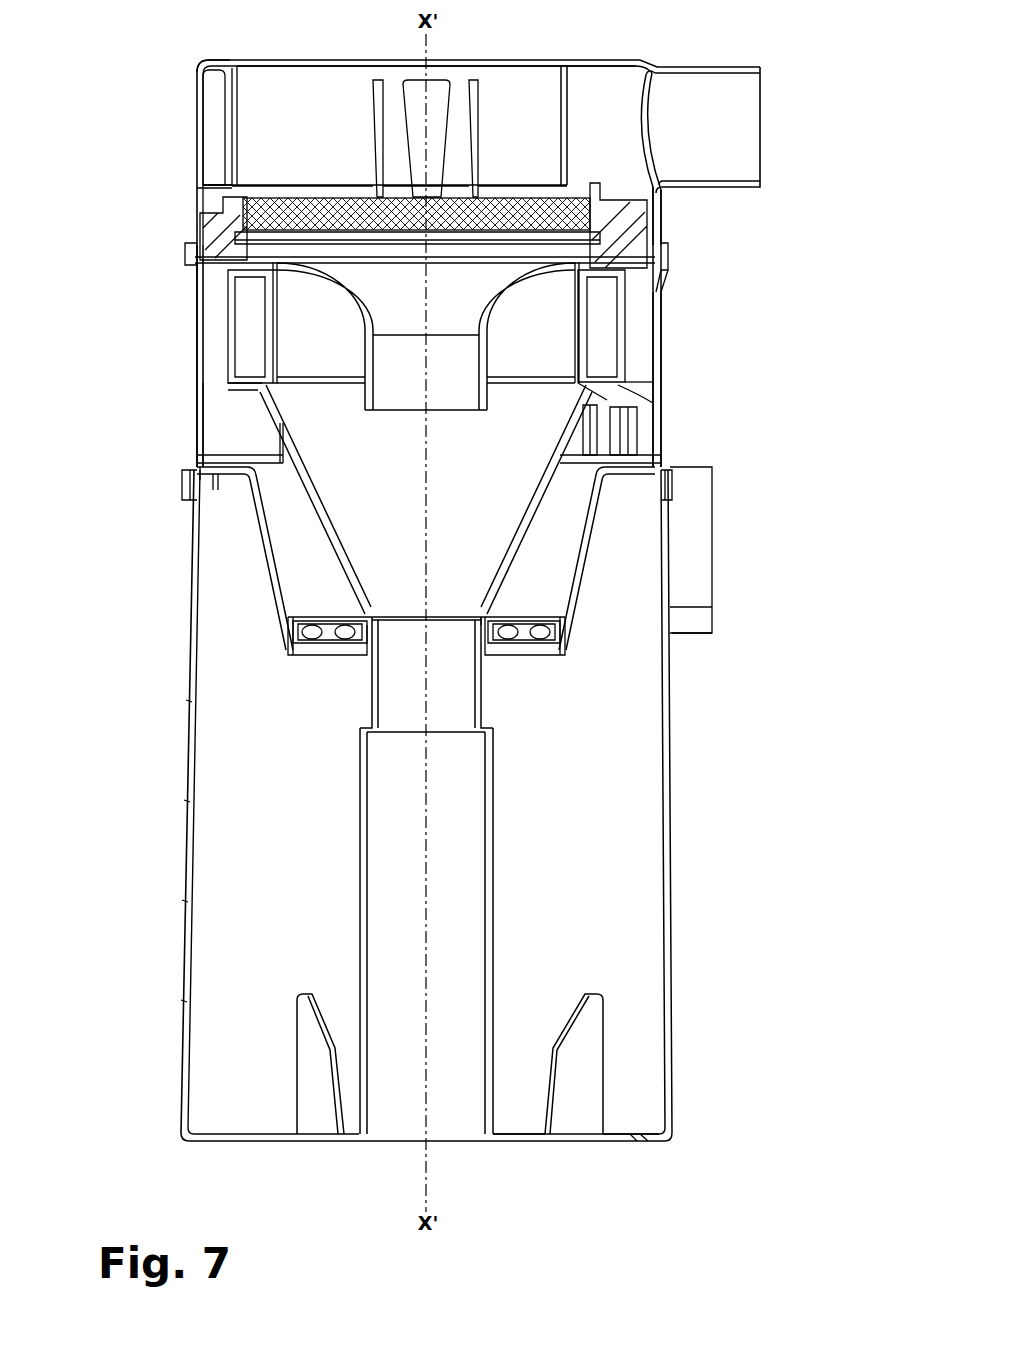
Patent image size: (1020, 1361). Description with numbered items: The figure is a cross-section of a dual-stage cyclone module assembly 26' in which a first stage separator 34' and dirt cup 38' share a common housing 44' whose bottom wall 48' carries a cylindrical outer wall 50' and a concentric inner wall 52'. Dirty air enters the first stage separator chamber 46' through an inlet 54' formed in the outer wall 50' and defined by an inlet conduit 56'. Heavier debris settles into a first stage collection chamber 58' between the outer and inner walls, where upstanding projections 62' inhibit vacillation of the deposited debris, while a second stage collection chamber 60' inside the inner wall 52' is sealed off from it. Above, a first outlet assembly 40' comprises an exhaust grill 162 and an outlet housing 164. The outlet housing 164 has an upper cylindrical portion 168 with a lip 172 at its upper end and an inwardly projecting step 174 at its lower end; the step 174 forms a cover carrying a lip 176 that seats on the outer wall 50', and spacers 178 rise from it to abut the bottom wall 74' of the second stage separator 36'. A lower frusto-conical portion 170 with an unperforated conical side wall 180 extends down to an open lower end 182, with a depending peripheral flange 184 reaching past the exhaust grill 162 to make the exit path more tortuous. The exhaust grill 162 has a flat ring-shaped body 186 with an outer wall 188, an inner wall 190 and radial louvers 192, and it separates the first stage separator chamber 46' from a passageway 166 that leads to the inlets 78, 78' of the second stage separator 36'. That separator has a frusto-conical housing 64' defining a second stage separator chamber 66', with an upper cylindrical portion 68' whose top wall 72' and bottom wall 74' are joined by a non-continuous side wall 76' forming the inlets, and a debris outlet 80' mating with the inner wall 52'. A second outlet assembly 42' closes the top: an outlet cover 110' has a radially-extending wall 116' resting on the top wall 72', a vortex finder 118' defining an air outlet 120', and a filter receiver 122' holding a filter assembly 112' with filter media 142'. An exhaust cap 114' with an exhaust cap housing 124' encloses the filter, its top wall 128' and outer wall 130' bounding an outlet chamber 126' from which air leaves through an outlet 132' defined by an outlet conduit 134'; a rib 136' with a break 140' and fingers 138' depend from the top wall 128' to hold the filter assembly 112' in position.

The cyclone module assembly 26' is at (410, 142).
The exhaust cap 114' is at (186, 39).
The rib 136' is at (245, 102).
The top wall 128' is at (436, 104).
The fingers 138' is at (433, 111).
The filter media 142' is at (416, 118).
The break 140' is at (611, 247).
The exhaust cap housing 124' is at (660, 44).
The outlet conduit 134' is at (714, 107).
The outer wall 130' is at (171, 120).
The outlet 132' is at (707, 129).
The outlet chamber 126' is at (385, 156).
The second outlet assembly 42' is at (147, 285).
The filter assembly 112' is at (158, 166).
The filter receiver 122' is at (160, 222).
The lip 172 is at (190, 262).
The top wall 72' is at (679, 225).
The outlet cover 110' is at (728, 216).
The radially-extending wall 116' is at (727, 280).
The upper cylindrical portion 68' is at (723, 379).
The inlets 78' is at (186, 316).
The inlets 78 is at (671, 327).
The housing 64' is at (185, 322).
The second stage separator 36' is at (150, 356).
The side wall 76' is at (178, 365).
The first outlet assembly 40' is at (147, 424).
The upper cylindrical portion 168 is at (662, 352).
The outlet housing 164 is at (662, 383).
The second stage separator chamber 66' is at (426, 336).
The air outlet 120' is at (426, 368).
The vortex finder 118' is at (425, 355).
The bottom wall 74' is at (690, 419).
The spacers 178 is at (625, 436).
The step 174 is at (210, 458).
The lip 176 is at (184, 488).
The passageway 166 is at (280, 522).
The first stage separator chamber 46' is at (245, 558).
The body 186 is at (566, 606).
The lower frusto-conical portion 170 is at (246, 515).
The conical side wall 180 is at (258, 557).
The first stage separator 34' is at (250, 805).
The dirt cup 38' is at (233, 802).
The housing 44' is at (145, 851).
The outer wall 50' is at (592, 805).
The bottom wall 48' is at (687, 1109).
The debris outlet 80' is at (426, 603).
The depending peripheral flange 184 is at (288, 650).
The open lower end 182 is at (338, 653).
The outer wall 188 is at (572, 645).
The inner wall 190 is at (505, 642).
The louvers 192 is at (530, 644).
The exhaust grill 162 is at (530, 604).
The second stage collection chamber 60' is at (426, 820).
The inner wall 52' is at (548, 931).
The first stage collection chamber 58' is at (576, 1093).
The projections 62' is at (449, 1097).
The inlet 54' is at (691, 550).
The inlet conduit 56' is at (729, 640).